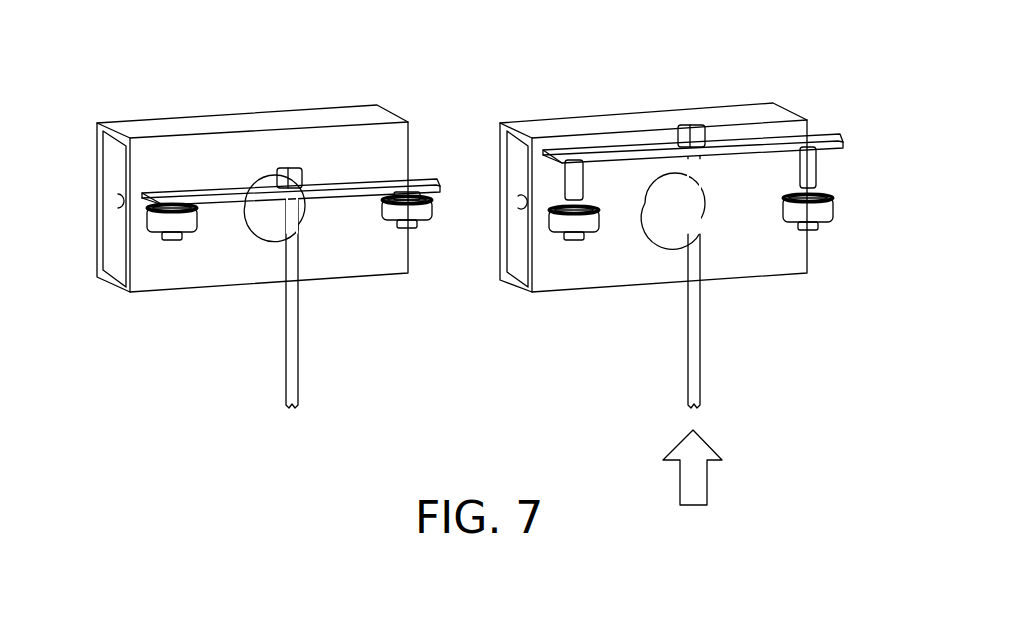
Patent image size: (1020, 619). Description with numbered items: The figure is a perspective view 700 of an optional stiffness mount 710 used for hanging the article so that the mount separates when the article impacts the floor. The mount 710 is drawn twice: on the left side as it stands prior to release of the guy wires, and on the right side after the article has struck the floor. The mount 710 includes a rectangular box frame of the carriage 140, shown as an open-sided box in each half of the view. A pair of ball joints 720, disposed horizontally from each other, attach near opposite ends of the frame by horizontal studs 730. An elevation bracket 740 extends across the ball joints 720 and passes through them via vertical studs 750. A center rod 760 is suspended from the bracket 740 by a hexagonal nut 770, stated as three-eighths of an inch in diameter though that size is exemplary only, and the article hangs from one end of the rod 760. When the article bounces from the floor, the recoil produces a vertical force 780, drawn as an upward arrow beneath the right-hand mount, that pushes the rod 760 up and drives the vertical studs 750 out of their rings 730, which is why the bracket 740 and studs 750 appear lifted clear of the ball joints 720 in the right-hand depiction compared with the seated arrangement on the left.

The carriage 140 is at (550, 295).
The perspective view 700 is at (547, 80).
The stiffness mount 710 is at (835, 95).
The ball joints 720 is at (423, 225).
The horizontal studs 730 is at (120, 197).
The elevation bracket 740 is at (418, 178).
The vertical studs 750 is at (818, 176).
The center rod 760 is at (283, 313).
The hexagonal nut 770 is at (281, 167).
The vertical force 780 is at (708, 480).